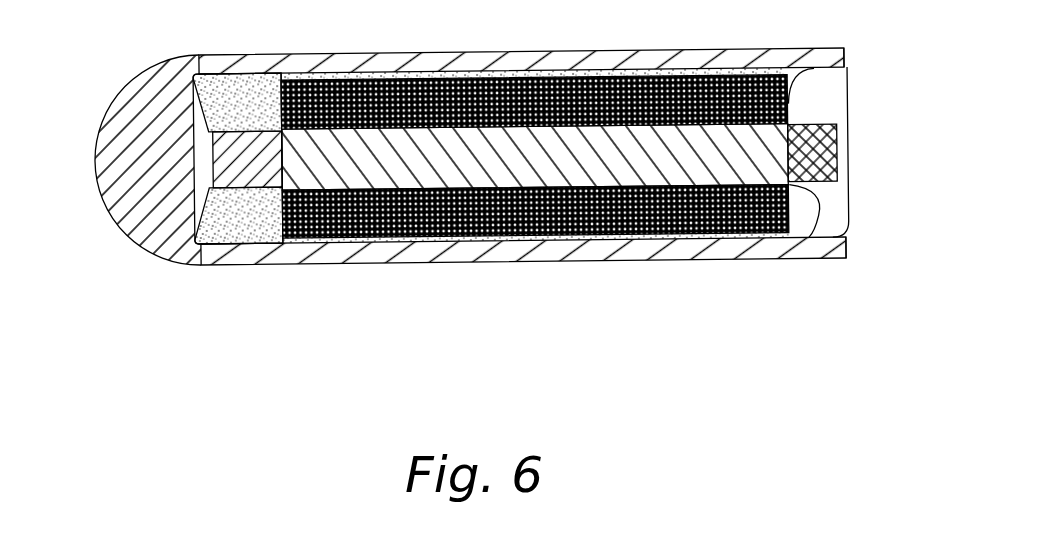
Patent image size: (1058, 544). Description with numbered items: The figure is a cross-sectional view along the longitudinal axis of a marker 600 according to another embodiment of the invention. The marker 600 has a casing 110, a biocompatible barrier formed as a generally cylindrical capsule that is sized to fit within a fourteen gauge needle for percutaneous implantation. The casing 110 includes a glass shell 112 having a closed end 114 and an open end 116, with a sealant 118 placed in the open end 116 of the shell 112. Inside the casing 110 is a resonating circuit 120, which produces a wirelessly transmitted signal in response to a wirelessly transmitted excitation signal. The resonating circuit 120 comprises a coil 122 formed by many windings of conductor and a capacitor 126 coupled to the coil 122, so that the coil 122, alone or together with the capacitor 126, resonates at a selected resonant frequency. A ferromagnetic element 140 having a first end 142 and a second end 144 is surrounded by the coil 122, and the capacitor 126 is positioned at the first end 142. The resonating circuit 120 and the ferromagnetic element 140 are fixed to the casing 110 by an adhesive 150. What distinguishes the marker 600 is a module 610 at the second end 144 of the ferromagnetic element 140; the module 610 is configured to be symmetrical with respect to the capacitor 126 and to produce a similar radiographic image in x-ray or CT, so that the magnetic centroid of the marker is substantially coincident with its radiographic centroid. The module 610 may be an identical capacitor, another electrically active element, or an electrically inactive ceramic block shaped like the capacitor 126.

The casing 110 is at (503, 54).
The shell 112 is at (400, 262).
The closed end 114 is at (94, 153).
The open end 116 is at (843, 68).
The sealant 118 is at (843, 108).
The resonating circuit 120 is at (260, 204).
The coil 122 is at (670, 241).
The capacitor 126 is at (243, 152).
The ferromagnetic element 140 is at (722, 80).
The first end 142 is at (280, 150).
The second end 144 is at (808, 244).
The adhesive 150 is at (248, 237).
The marker 600 is at (430, 349).
The module 610 is at (838, 148).